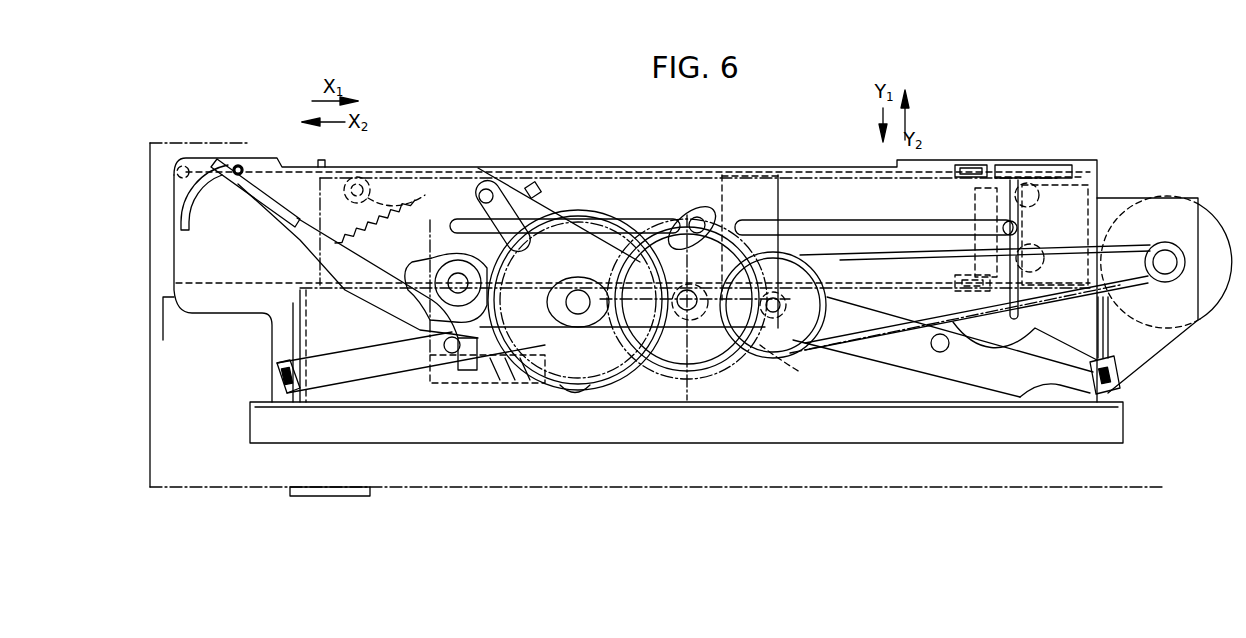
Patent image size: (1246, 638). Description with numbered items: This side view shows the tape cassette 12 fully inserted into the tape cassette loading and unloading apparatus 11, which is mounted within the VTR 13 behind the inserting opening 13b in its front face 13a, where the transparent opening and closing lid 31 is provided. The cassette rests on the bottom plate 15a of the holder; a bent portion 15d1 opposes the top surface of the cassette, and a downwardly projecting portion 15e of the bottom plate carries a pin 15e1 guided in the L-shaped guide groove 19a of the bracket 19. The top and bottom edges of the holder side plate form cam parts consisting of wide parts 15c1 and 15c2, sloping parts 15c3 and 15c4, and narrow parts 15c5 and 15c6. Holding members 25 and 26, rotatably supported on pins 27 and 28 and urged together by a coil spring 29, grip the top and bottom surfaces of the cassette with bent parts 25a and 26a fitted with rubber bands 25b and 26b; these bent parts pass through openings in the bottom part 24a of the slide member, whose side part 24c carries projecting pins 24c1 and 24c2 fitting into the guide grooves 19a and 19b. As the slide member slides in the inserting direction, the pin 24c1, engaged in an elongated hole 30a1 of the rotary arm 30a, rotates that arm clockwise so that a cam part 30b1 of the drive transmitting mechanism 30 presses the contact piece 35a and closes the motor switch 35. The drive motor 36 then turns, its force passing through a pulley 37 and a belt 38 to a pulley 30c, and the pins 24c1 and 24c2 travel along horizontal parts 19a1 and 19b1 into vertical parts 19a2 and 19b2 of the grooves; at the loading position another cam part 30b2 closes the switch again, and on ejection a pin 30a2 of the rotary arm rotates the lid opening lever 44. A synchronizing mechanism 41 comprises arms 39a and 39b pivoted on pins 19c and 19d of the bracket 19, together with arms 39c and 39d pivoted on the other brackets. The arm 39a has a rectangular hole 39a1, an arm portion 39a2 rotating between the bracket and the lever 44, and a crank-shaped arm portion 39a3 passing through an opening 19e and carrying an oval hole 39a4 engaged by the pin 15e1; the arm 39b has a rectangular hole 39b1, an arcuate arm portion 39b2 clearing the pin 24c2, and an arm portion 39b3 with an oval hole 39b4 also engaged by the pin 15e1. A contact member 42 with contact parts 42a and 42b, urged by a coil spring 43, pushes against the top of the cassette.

The tape cassette loading and unloading apparatus 11 is at (718, 162).
The tape cassette 12 is at (405, 175).
The VTR 13 is at (230, 143).
The front face 13a is at (150, 345).
The inserting opening 13b is at (152, 262).
The bottom plate 15a is at (856, 283).
The wide part 15c1 is at (735, 170).
The wide part 15c2 is at (772, 336).
The sloping part 15c3 is at (772, 172).
The sloping part 15c4 is at (795, 304).
The narrow part 15c5 is at (812, 170).
The narrow part 15c6 is at (969, 314).
The bent portion 15d1 is at (1062, 166).
The downwardly projecting portion 15e is at (767, 305).
The pin 15e1 is at (712, 236).
The bracket 19 is at (667, 282).
The L-shaped guide groove 19a is at (640, 218).
The horizontal part 19a1 is at (590, 218).
The vertical part 19a2 is at (735, 380).
The guide groove 19b is at (920, 220).
The horizontal part 19b1 is at (848, 221).
The vertical part 19b2 is at (980, 322).
The pin 19c is at (415, 330).
The pin 19d is at (935, 352).
The opening 19e is at (475, 372).
The bottom part 24a is at (585, 290).
The side part 24c is at (645, 178).
The projecting pin 24c1 is at (483, 221).
The projecting pin 24c2 is at (1017, 229).
The holding member 25 is at (1090, 172).
The bent part 25a is at (1020, 168).
The rubber band 25b is at (968, 165).
The holding member 26 is at (1150, 262).
The bent part 26a is at (956, 283).
The rubber band 26b is at (947, 349).
The pin 27 is at (1030, 182).
The pin 28 is at (1016, 310).
The coil spring 29 is at (950, 255).
The drive transmitting mechanism 30 is at (620, 284).
The rotary arm 30a is at (712, 213).
The elongated hole 30a1 is at (507, 212).
The pin 30a2 is at (552, 390).
The cam part 30b1 is at (470, 268).
The cam part 30b2 is at (588, 390).
The pulley 30c is at (795, 356).
The opening and closing lid 31 is at (262, 158).
The motor switch 35 is at (455, 383).
The contact piece 35a is at (580, 398).
The drive motor 36 is at (1210, 320).
The pulley 37 is at (1166, 242).
The belt 38 is at (906, 368).
The arm 39a is at (388, 377).
The rectangular hole 39a1 is at (278, 368).
The arm portion 39a2 is at (343, 385).
The arm portion 39a3 is at (520, 283).
The oval hole 39a4 is at (694, 380).
The arm 39b is at (963, 378).
The rectangular hole 39b1 is at (1120, 382).
The arm portion 39b2 is at (1030, 375).
The arm portion 39b3 is at (815, 286).
The oval hole 39b4 is at (712, 358).
The arm 39c is at (290, 395).
The arm 39d is at (1098, 388).
The synchronizing mechanism 41 is at (866, 352).
The contact member 42 is at (425, 175).
The contact part 42a is at (492, 166).
The contact part 42b is at (510, 166).
The coil spring 43 is at (362, 235).
The lid opening lever 44 is at (315, 346).